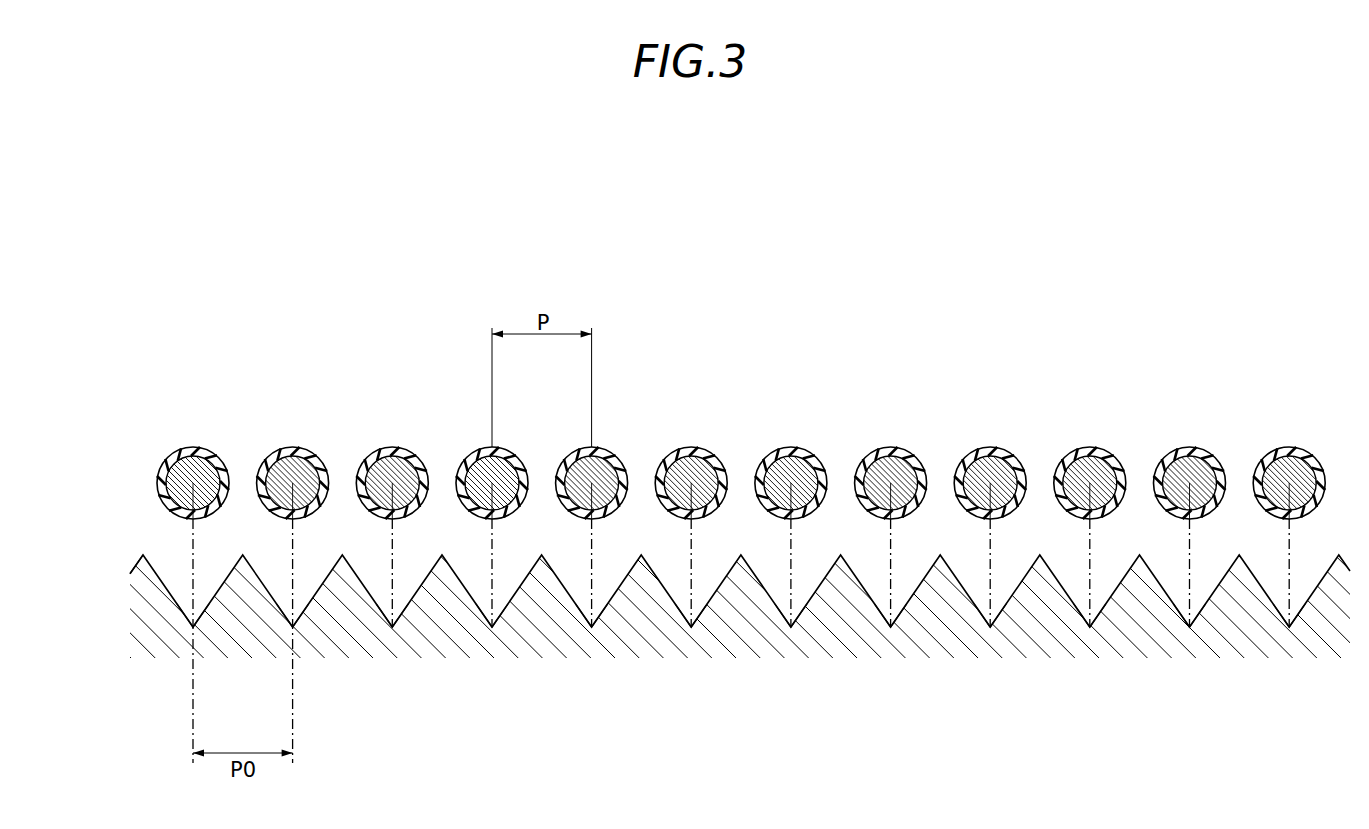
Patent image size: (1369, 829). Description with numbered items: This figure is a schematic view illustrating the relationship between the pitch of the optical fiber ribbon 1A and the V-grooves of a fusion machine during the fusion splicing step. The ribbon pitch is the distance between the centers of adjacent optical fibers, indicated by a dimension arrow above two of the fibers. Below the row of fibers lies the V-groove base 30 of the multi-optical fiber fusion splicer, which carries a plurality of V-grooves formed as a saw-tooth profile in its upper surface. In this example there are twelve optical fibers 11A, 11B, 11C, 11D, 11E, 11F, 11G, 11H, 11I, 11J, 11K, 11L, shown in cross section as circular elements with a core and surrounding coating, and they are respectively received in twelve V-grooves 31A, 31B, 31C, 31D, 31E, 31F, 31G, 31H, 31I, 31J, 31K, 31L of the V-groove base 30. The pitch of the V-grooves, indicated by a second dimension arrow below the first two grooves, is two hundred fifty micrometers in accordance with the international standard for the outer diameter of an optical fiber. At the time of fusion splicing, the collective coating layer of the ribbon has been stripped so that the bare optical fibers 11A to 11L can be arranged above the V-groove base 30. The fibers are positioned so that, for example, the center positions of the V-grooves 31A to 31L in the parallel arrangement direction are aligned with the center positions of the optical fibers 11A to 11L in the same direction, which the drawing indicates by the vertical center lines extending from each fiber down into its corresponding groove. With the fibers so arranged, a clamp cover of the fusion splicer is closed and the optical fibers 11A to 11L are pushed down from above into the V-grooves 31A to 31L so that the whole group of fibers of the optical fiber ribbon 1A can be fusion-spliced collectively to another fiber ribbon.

The optical fiber ribbon 1A is at (1059, 236).
The optical fiber 11A is at (202, 446).
The optical fiber 11B is at (302, 446).
The optical fiber 11C is at (401, 446).
The optical fiber 11D is at (501, 446).
The optical fiber 11E is at (601, 446).
The optical fiber 11F is at (700, 446).
The optical fiber 11G is at (800, 446).
The optical fiber 11H is at (900, 446).
The optical fiber 11I is at (999, 446).
The optical fiber 11J is at (1099, 446).
The optical fiber 11K is at (1198, 446).
The optical fiber 11L is at (1298, 446).
The V-groove base 30 is at (628, 633).
The V-groove 31A is at (190, 617).
The V-groove 31B is at (290, 617).
The V-groove 31C is at (389, 617).
The V-groove 31D is at (489, 617).
The V-groove 31E is at (589, 617).
The V-groove 31F is at (688, 617).
The V-groove 31G is at (788, 617).
The V-groove 31H is at (888, 617).
The V-groove 31I is at (987, 617).
The V-groove 31J is at (1087, 617).
The V-groove 31K is at (1186, 617).
The V-groove 31L is at (1286, 617).